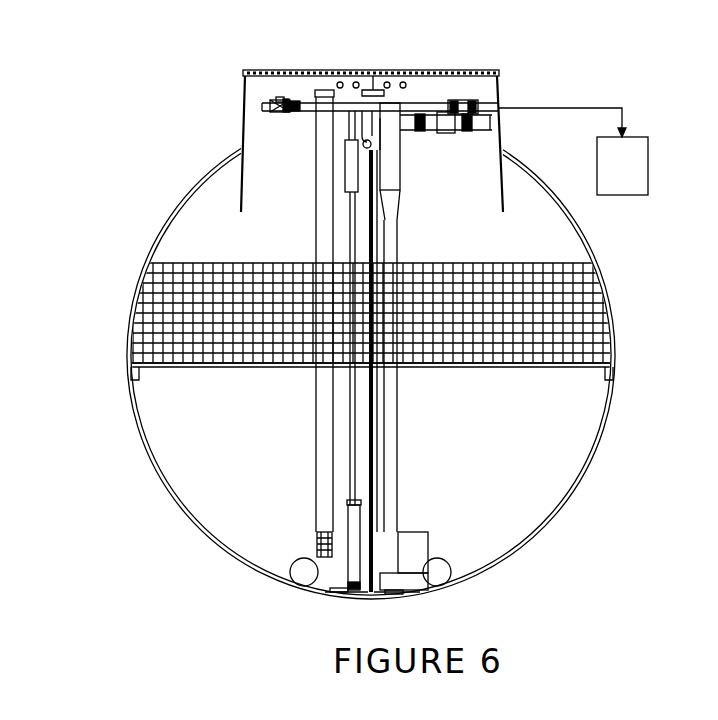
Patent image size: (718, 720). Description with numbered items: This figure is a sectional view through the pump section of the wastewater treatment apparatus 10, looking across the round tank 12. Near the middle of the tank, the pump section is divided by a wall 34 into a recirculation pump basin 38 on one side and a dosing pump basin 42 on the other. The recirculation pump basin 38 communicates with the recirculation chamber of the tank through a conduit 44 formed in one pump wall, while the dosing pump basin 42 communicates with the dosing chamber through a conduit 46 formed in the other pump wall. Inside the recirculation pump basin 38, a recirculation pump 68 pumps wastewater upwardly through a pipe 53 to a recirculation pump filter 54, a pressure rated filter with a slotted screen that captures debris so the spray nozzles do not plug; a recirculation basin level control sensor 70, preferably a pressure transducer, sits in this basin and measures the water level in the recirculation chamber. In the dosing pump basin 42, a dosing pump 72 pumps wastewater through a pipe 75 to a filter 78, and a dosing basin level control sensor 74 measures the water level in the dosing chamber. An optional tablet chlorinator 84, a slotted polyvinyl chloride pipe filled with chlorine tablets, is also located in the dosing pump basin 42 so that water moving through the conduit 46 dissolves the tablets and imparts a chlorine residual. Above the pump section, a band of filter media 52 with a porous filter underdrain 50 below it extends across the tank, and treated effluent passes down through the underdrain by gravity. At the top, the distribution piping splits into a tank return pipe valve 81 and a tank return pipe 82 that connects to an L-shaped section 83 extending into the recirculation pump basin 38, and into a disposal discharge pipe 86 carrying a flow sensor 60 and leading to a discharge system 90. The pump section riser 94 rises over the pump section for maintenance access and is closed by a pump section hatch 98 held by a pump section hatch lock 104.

The wastewater treatment apparatus 10 is at (128, 150).
The tank 12 is at (160, 222).
The pump section hatch lock 104 is at (243, 75).
The disposal discharge pipe 86 is at (502, 108).
The discharge system 90 is at (597, 152).
The pump section riser 94 is at (244, 113).
The pump section hatch 98 is at (283, 95).
The tank return pipe valve 81 is at (287, 95).
The tank return pipe 82 is at (373, 89).
The flow sensor 60 is at (448, 100).
The tablet chlorinator 84 is at (317, 372).
The filter 78 is at (345, 162).
The pipe 75 is at (350, 247).
The dosing pump 72 is at (349, 520).
The wall 34 is at (374, 425).
The recirculation pump filter 54 is at (400, 190).
The L-shaped section 83 is at (405, 123).
The pipe 53 is at (398, 410).
The filter media 52 is at (195, 315).
The porous filter underdrain 50 is at (520, 365).
The dosing pump basin 42 is at (268, 485).
The recirculation pump basin 38 is at (478, 497).
The conduit 46 is at (291, 563).
The conduit 44 is at (448, 562).
The recirculation pump 68 is at (428, 532).
The dosing basin level control sensor 74 is at (322, 592).
The recirculation basin level control sensor 70 is at (400, 593).